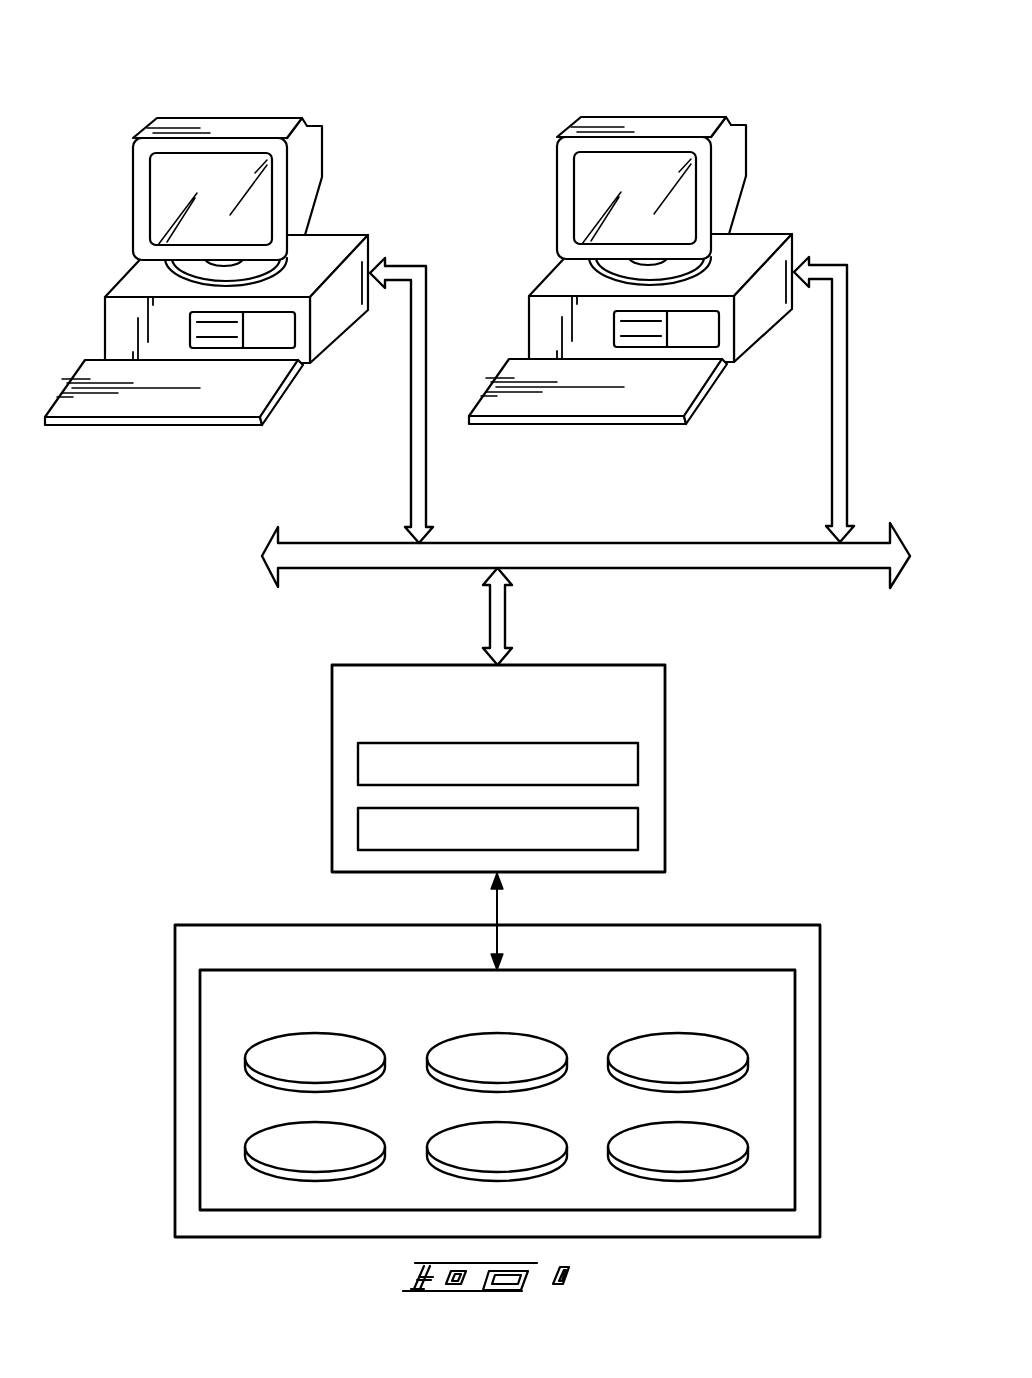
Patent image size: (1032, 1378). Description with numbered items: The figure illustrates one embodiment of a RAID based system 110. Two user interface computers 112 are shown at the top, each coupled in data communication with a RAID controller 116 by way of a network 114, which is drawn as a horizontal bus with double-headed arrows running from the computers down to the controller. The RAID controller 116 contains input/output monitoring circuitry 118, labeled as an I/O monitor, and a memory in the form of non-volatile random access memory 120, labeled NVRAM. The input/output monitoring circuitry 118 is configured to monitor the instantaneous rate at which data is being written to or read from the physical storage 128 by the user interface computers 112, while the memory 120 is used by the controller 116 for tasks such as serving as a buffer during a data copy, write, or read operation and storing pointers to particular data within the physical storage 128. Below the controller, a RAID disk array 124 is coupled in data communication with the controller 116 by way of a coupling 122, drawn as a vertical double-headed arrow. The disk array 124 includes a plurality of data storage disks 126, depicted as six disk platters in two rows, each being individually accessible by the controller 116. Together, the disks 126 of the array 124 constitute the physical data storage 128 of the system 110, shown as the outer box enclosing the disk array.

The RAID based system 110 is at (748, 63).
The user interface computers 112 is at (222, 130).
The network 114 is at (411, 421).
The RAID controller 116 is at (667, 687).
The input/output monitoring circuitry 118 is at (640, 765).
The non-volatile random access memory 120 is at (640, 829).
The coupling 122 is at (495, 912).
The RAID disk array 124 is at (797, 1088).
The data storage disks 126 is at (294, 1067).
The physical storage 128 is at (175, 1103).